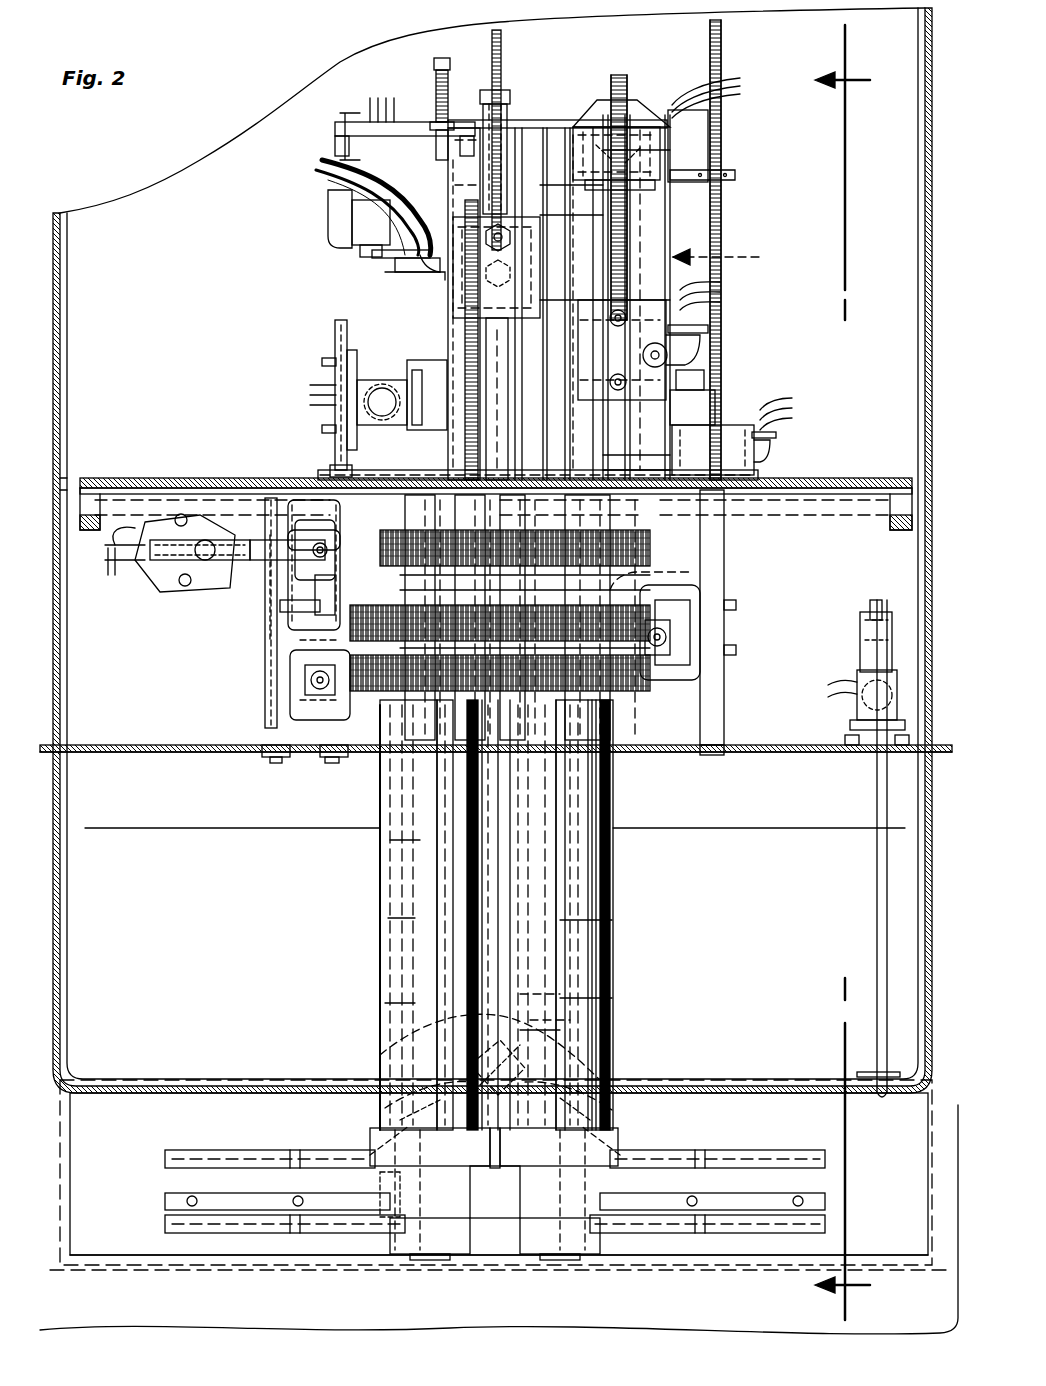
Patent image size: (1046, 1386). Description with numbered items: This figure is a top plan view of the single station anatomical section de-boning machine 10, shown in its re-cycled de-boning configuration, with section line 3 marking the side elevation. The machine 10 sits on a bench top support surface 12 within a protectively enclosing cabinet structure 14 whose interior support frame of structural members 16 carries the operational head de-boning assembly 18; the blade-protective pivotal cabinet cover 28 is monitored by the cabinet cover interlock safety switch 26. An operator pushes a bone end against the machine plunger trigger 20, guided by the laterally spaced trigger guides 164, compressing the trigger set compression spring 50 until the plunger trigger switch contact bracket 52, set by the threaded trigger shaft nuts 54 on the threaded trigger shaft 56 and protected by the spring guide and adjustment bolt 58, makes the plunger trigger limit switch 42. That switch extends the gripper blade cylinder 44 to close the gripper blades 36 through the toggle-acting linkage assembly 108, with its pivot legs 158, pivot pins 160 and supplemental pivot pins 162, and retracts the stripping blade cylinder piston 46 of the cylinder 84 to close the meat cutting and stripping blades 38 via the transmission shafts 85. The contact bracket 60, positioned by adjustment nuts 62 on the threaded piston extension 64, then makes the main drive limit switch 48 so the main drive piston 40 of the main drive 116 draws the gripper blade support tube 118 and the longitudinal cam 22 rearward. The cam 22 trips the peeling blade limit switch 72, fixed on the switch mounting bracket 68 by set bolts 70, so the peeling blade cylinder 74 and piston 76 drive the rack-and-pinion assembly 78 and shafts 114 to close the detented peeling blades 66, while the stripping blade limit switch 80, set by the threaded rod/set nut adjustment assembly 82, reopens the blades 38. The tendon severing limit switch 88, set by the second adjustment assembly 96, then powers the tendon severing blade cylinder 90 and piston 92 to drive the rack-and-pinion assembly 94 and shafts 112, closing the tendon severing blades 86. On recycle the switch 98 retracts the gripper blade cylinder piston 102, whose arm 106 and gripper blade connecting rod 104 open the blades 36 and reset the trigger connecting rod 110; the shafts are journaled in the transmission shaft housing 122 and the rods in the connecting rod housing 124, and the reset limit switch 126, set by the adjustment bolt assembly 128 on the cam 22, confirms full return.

The section line 3- 3 is at (857, 672).
The single station anatomical section de-boning machine 10 is at (255, 128).
The bench top support surface 12 is at (112, 1292).
The cabinet structure 14 is at (190, 195).
The structural members 16 is at (188, 480).
The operational head de-boning assembly 18 is at (455, 1290).
The machine plunger trigger 20 is at (495, 1200).
The longitudinal cam 22 is at (555, 425).
The pivotal cabinet cover electrical interlock safety switch 26 is at (858, 652).
The pivotal cabinet cover 28 is at (64, 1150).
The gripper blades 36 is at (400, 1258).
The meat cutting and stripping blades 38 is at (165, 1221).
The main drive piston 40 is at (512, 210).
The plunger trigger electrical solenoid air valve limit switch 42 is at (328, 222).
The gripper blade cylinder 44 is at (670, 230).
The meat cutting and stripping blade cylinder piston 46 is at (268, 604).
The main drive piston electrical solenoid air valve limit switch 48 is at (175, 575).
The trigger set compression spring 50 is at (437, 85).
The plunger trigger switch contact bracket 52 is at (440, 285).
The threaded trigger shaft nuts 54 is at (508, 100).
The threaded trigger shaft 56 is at (504, 75).
The trigger set compression spring guide and adjustment bolt 58 is at (446, 62).
The main drive piston limit switch contact bracket 60 is at (240, 570).
The adjustment nuts 62 is at (325, 580).
The threaded cylinder piston extension 64 is at (300, 600).
The detented peeling blades 66 is at (165, 1196).
The switch mounting bracket 68 is at (330, 322).
The switch mounting bracket compression set bolts 70 is at (320, 360).
The detented peeling blade electrical solenoid air valve limit switch 72 is at (436, 428).
The detented peeling blade cylinder 74 is at (300, 468).
The detented peeling blade cylinder piston 76 is at (680, 638).
The detented peeling blade rack-and-pinion assembly 78 is at (585, 605).
The meat cutting and stripping blade electrical solenoid air valve limit switch 80 is at (690, 345).
The threaded rod/set nut adjustment assembly 82 is at (632, 80).
The meat cutting and stripping blade cylinder 84 is at (356, 584).
The blade rotating transmission shafts 85 is at (388, 921).
The tendon severing blades 86 is at (168, 1152).
The tendon severing blade electrical solenoid air valve limit switch 88 is at (410, 262).
The tendon severing blade cylinder 90 is at (440, 755).
The tendon severing blade cylinder piston 92 is at (320, 715).
The tendon severing blade rack-and-pinion assembly 94 is at (612, 822).
The second threaded rod/set nut adjustment assembly 96 is at (522, 110).
The machine recycle electrical solenoid air valve limit switch 98 is at (690, 140).
The gripper blade cylinder piston 102 is at (640, 100).
The gripper blade connecting rod 104 is at (560, 994).
The gripper blade cylinder to connecting rod arm 106 is at (560, 130).
The toggle-acting linkage assembly 108 is at (628, 1108).
The trigger connecting rod 110 is at (500, 888).
The blade rotating transmission shafts 112 is at (382, 946).
The peeling blade rotating transmission shafts 114 is at (392, 856).
The main drive 116 is at (390, 816).
The gripper blade support tube 118 is at (545, 932).
The transmission shaft housing 122 is at (380, 888).
The connecting rod housing 124 is at (575, 1022).
The reset limit switch 126 is at (720, 392).
The reset limit switch adjustment bolt assembly 128 is at (765, 242).
The gripper blade supporting pivot legs 158 is at (375, 1133).
The pivot pins 160 is at (380, 989).
The supplemental pivot pins 162 is at (380, 1093).
The trigger guides 164 is at (375, 1156).